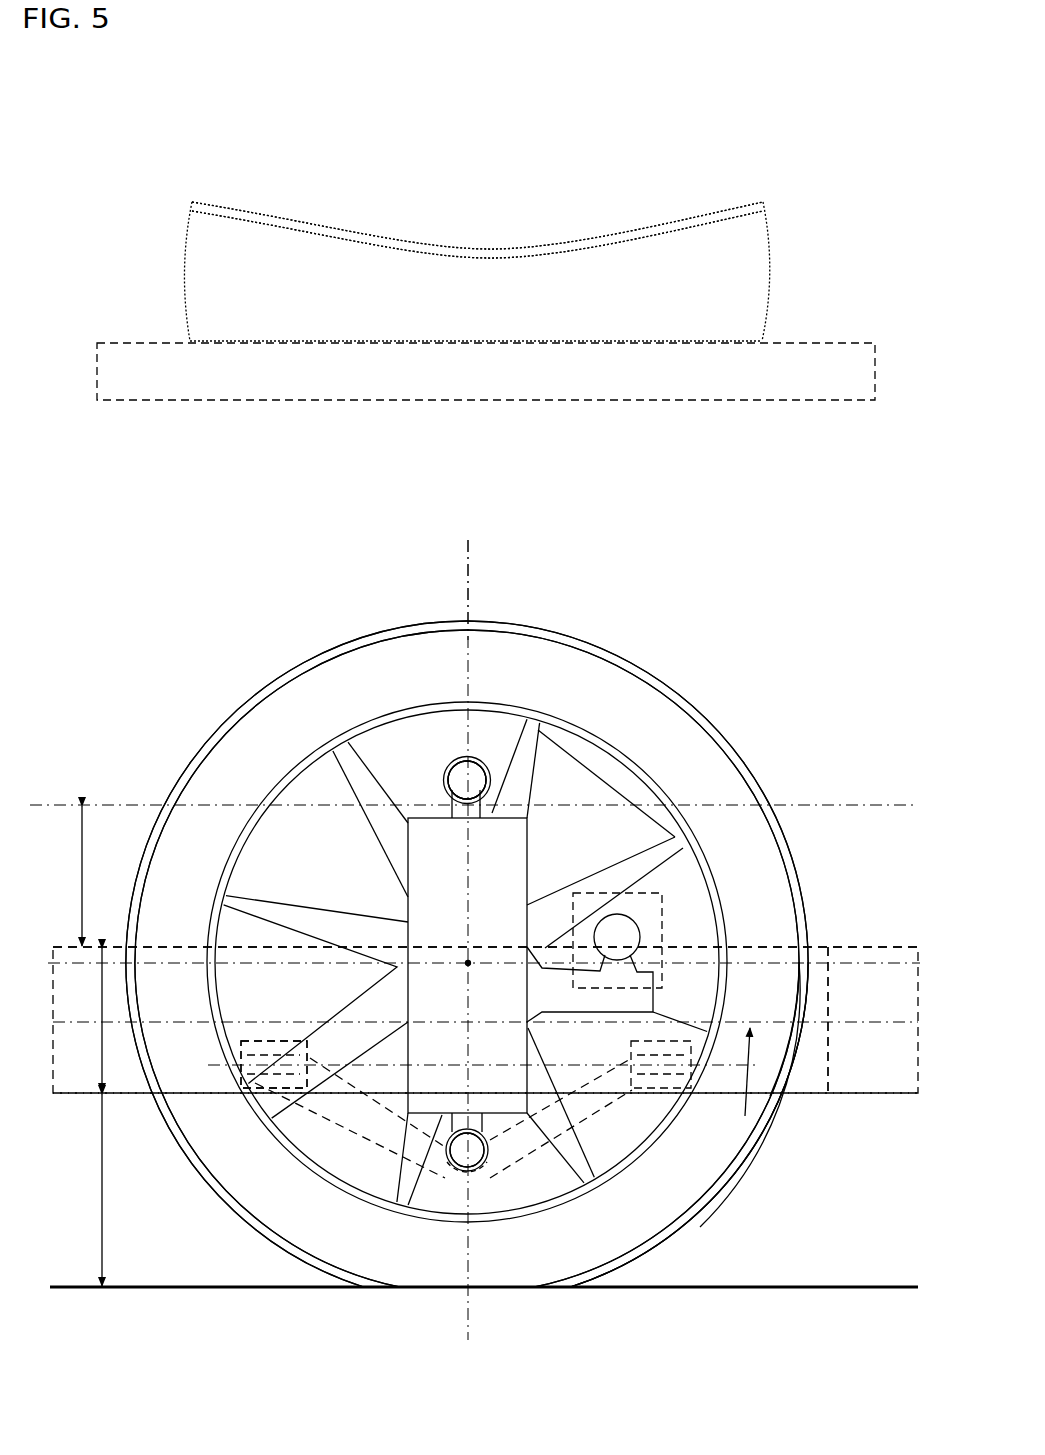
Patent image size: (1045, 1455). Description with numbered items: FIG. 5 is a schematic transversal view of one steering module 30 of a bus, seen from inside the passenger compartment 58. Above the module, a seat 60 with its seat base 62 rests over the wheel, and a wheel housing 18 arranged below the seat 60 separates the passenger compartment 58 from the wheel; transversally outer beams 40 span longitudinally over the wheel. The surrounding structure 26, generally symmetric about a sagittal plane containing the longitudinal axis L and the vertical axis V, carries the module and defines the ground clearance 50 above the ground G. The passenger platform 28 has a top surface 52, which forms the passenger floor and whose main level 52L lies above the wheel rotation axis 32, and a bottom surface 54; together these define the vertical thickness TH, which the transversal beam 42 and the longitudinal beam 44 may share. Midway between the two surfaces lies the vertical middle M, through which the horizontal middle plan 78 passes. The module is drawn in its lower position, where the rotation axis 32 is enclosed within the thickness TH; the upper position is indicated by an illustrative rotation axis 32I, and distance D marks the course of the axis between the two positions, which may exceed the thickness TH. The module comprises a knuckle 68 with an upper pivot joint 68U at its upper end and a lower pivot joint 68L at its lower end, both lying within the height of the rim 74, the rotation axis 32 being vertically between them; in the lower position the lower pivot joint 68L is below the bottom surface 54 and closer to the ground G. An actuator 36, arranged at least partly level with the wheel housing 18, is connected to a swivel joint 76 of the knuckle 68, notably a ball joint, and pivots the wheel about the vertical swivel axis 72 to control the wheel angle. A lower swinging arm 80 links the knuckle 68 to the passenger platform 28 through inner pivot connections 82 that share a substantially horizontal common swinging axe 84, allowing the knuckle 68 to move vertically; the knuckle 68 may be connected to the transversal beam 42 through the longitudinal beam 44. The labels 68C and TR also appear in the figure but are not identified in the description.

The wheel housing 18 is at (467, 923).
The structure 26 is at (467, 945).
The passenger platform 28 is at (780, 1160).
The steering module 30 is at (655, 622).
The rotation axis 32 is at (466, 960).
The illustrative rotation axis 32I is at (455, 782).
The actuator 36 is at (663, 903).
The transversally outer beams 40 is at (486, 371).
The transversal beam 42 is at (485, 1020).
The longitudinal beam 44 is at (792, 1082).
The ground clearance 50 is at (85, 1190).
The top surface 52 is at (108, 945).
The main level 52L is at (868, 945).
The bottom surface 54 is at (130, 1095).
The passenger compartment 58 is at (447, 238).
The seat 60 is at (455, 197).
The seat base 62 is at (477, 264).
The knuckle 68 is at (467, 961).
The upper pivot joint 68U is at (453, 763).
The lower pivot joint 68L is at (450, 1168).
The hub joint circle 68C is at (482, 763).
The vertical swivel axis 72 is at (462, 545).
The rim 74 is at (268, 811).
The swivel joint 76 is at (614, 915).
The horizontal middle plan 78 is at (768, 1020).
The lower swinging arm 80 is at (398, 1125).
The inner pivot connections 82 is at (265, 1092).
The common swinging axe 84 is at (252, 1050).
The vertical axis V is at (470, 572).
The longitudinal axis L is at (830, 805).
The distance D is at (70, 876).
The thickness TH is at (82, 1020).
The rotation axis TR is at (470, 965).
The vertical middle M is at (731, 1090).
The ground G is at (735, 1290).